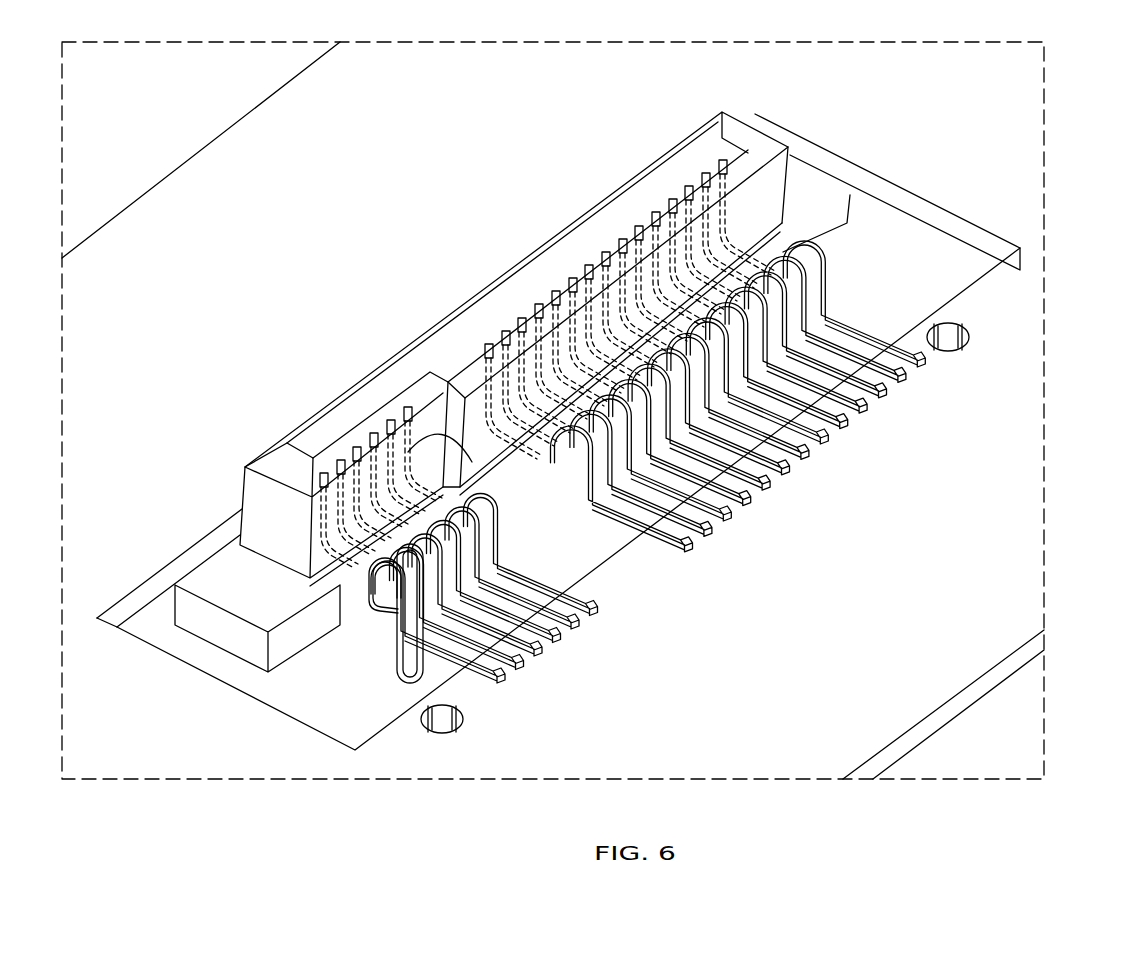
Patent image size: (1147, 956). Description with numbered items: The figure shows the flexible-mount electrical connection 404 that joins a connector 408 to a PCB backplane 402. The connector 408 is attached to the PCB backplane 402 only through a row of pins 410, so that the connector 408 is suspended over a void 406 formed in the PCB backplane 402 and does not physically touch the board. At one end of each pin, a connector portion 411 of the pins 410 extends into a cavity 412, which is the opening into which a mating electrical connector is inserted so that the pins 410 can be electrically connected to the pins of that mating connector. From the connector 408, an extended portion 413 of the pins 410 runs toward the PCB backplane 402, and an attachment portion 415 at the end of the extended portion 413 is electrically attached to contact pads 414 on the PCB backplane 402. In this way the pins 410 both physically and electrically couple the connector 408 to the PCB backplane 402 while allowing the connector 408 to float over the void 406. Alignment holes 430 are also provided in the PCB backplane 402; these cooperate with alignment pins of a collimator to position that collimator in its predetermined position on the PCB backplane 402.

The PCB backplane 402 is at (1014, 470).
The flexible-mount electrical connection 404 is at (316, 328).
The void 406 is at (882, 228).
The connector 408 is at (270, 440).
The pins 410 is at (836, 324).
The connector portion 411 is at (456, 458).
The cavity 412 is at (510, 298).
The extended portion 413 is at (514, 589).
The contact pads 414 is at (713, 556).
The attachment portion 415 is at (590, 604).
The alignment holes 430 is at (463, 716).